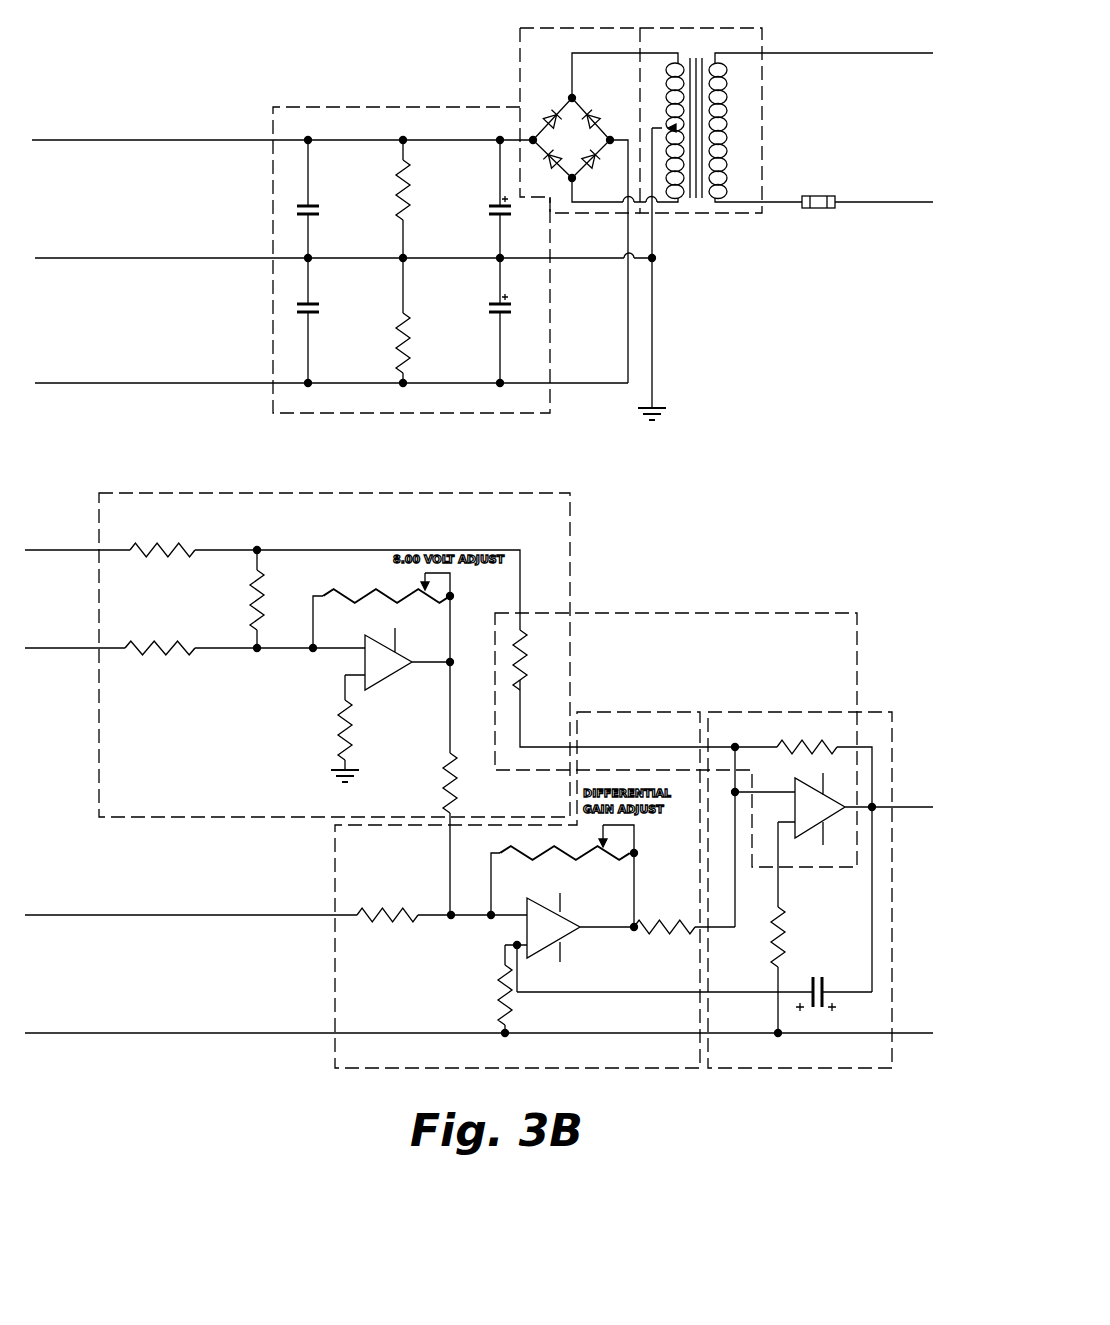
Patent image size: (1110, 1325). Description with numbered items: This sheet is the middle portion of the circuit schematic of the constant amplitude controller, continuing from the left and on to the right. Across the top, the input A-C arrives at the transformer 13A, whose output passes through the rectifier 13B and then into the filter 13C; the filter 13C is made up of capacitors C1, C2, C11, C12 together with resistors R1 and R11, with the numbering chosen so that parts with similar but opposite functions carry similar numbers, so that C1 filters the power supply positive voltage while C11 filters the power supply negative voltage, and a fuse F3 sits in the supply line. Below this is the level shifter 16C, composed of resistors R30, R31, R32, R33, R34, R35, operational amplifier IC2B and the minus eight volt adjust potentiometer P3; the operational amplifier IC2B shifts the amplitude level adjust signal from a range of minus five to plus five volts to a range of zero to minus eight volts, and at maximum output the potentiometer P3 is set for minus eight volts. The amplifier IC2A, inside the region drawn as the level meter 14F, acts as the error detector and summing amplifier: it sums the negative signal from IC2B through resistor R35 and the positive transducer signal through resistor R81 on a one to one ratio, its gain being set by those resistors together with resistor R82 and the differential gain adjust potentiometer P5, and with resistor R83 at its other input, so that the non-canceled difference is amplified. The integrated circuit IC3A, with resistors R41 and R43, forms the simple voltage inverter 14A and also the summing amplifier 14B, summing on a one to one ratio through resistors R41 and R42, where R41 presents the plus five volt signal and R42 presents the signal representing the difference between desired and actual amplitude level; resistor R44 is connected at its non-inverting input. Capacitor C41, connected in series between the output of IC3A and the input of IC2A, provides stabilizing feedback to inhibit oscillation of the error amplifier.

The transformer 13A is at (735, 26).
The rectifier 13B is at (615, 26).
The filter 13C is at (498, 416).
The level shifter 16C is at (291, 490).
The inverter 14A is at (721, 610).
The level meter 14F is at (678, 710).
The summing amplifier 14B is at (806, 710).
The fuse F3 is at (847, 212).
The capacitor C1 is at (510, 210).
The capacitor C2 is at (320, 211).
The capacitor C11 is at (516, 304).
The capacitor C12 is at (325, 309).
The resistor R1 is at (415, 190).
The resistor R11 is at (421, 343).
The resistor R30 is at (162, 542).
The resistor R31 is at (272, 599).
The resistor R32 is at (160, 640).
The resistor R33 is at (357, 728).
The resistor R34 is at (381, 617).
The resistor R35 is at (433, 788).
The −8 volt adjust potentiometer P3 is at (447, 586).
The operational amplifier IC2B is at (399, 658).
The resistor R41 is at (535, 660).
The resistor R43 is at (802, 857).
The resistor R44 is at (794, 929).
The capacitor C41 is at (694, 988).
The integrated circuit IC3A is at (833, 837).
The resistor R81 is at (387, 904).
The resistor R82 is at (564, 878).
The differential gain adjust potentiometer P5 is at (627, 839).
The amplifier IC2A is at (571, 942).
The resistor R42 is at (684, 918).
The resistor R83 is at (486, 989).